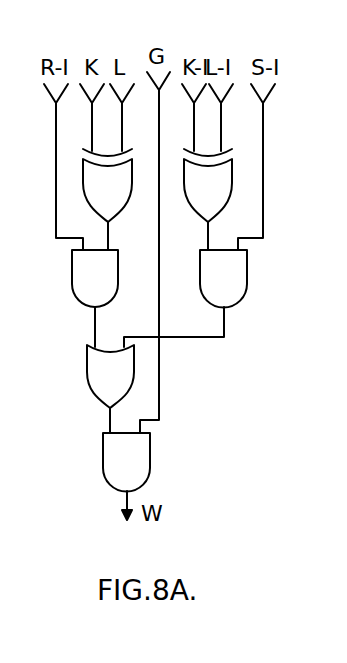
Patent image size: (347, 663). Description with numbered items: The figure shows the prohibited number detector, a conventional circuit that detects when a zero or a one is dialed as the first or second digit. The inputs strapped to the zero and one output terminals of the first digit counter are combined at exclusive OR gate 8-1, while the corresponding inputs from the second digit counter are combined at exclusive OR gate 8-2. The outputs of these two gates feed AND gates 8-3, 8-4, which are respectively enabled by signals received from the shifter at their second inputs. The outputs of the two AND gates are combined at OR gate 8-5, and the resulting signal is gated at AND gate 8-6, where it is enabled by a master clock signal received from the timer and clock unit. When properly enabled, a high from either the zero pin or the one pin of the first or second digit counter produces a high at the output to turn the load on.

The exclusive OR gate 8-1 is at (125, 199).
The exclusive OR gate 8-2 is at (193, 198).
The AND gate 8-3 is at (116, 284).
The AND gate 8-4 is at (203, 290).
The OR gate 8-5 is at (93, 390).
The AND gate 8-6 is at (107, 455).